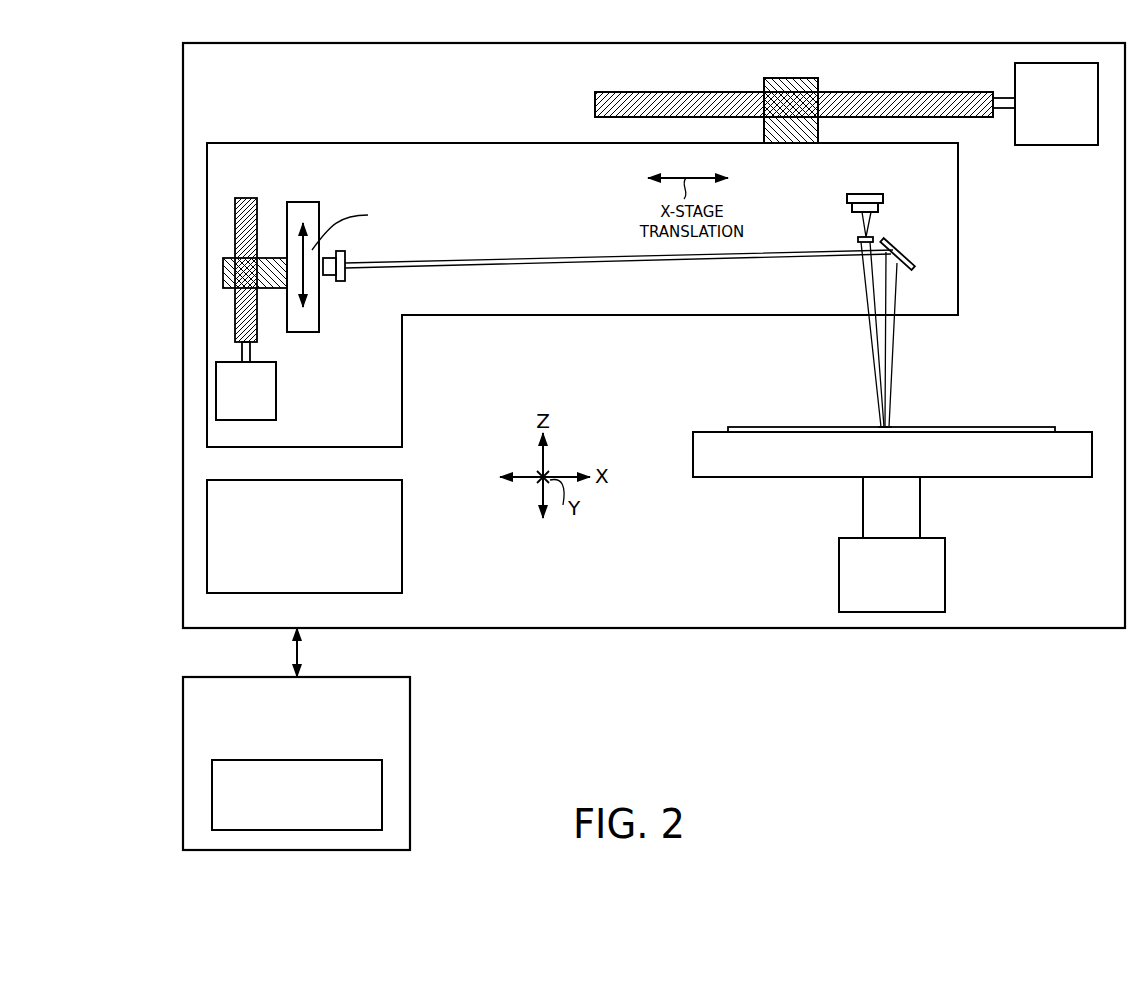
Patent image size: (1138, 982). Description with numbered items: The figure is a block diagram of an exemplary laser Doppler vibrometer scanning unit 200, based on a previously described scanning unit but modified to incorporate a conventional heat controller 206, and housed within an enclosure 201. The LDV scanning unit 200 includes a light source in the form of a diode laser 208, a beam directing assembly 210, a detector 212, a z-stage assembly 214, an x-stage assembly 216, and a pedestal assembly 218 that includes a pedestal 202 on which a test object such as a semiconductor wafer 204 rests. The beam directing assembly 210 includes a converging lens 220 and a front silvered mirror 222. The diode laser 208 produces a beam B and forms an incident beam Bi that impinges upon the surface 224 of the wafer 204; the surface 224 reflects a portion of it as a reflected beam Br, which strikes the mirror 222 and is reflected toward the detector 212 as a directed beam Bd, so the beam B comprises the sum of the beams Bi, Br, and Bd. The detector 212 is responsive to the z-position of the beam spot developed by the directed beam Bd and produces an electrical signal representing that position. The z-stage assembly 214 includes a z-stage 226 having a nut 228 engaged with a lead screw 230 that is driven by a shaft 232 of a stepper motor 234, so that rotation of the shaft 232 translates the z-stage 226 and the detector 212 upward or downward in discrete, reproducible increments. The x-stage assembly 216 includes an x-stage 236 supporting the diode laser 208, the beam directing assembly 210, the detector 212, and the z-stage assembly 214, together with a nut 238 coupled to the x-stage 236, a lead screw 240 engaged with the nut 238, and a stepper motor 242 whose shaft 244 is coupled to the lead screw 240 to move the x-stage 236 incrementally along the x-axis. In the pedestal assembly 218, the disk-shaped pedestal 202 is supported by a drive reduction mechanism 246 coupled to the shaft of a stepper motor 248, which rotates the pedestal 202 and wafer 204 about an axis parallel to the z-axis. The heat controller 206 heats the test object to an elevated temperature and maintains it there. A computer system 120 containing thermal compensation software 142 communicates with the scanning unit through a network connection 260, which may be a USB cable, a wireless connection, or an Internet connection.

The LDV scanning unit 200 is at (183, 68).
The enclosure 201 is at (638, 628).
The pedestal 202 is at (726, 468).
The wafer 204 is at (753, 428).
The heat controller 206 is at (402, 532).
The diode laser 208 is at (847, 200).
The beam directing assembly 210 is at (896, 229).
The detector 212 is at (343, 282).
The z-stage assembly 214 is at (289, 292).
The x-stage assembly 216 is at (846, 120).
The pedestal assembly 218 is at (892, 493).
The converging lens 220 is at (858, 239).
The front silvered mirror 222 is at (910, 258).
The surface 224 is at (902, 427).
The z-stage 226 is at (304, 208).
The nut 228 is at (223, 262).
The lead screw 230 is at (235, 312).
The shaft 232 is at (242, 350).
The stepper motor 234 is at (218, 395).
The x-stage 236 is at (488, 152).
The nut 238 is at (765, 82).
The lead screw 240 is at (884, 95).
The stepper motor 242 is at (1043, 138).
The shaft 244 is at (1005, 102).
The drive reduction mechanism 246 is at (870, 513).
The stepper motor 248 is at (847, 593).
The network connection 260 is at (303, 652).
The computer system 120 is at (293, 763).
The thermal compensation software 142 is at (382, 782).
The beam B is at (648, 334).
The directed beam Bd is at (753, 259).
The incident beam Bi is at (865, 275).
The reflected beam Br is at (892, 277).